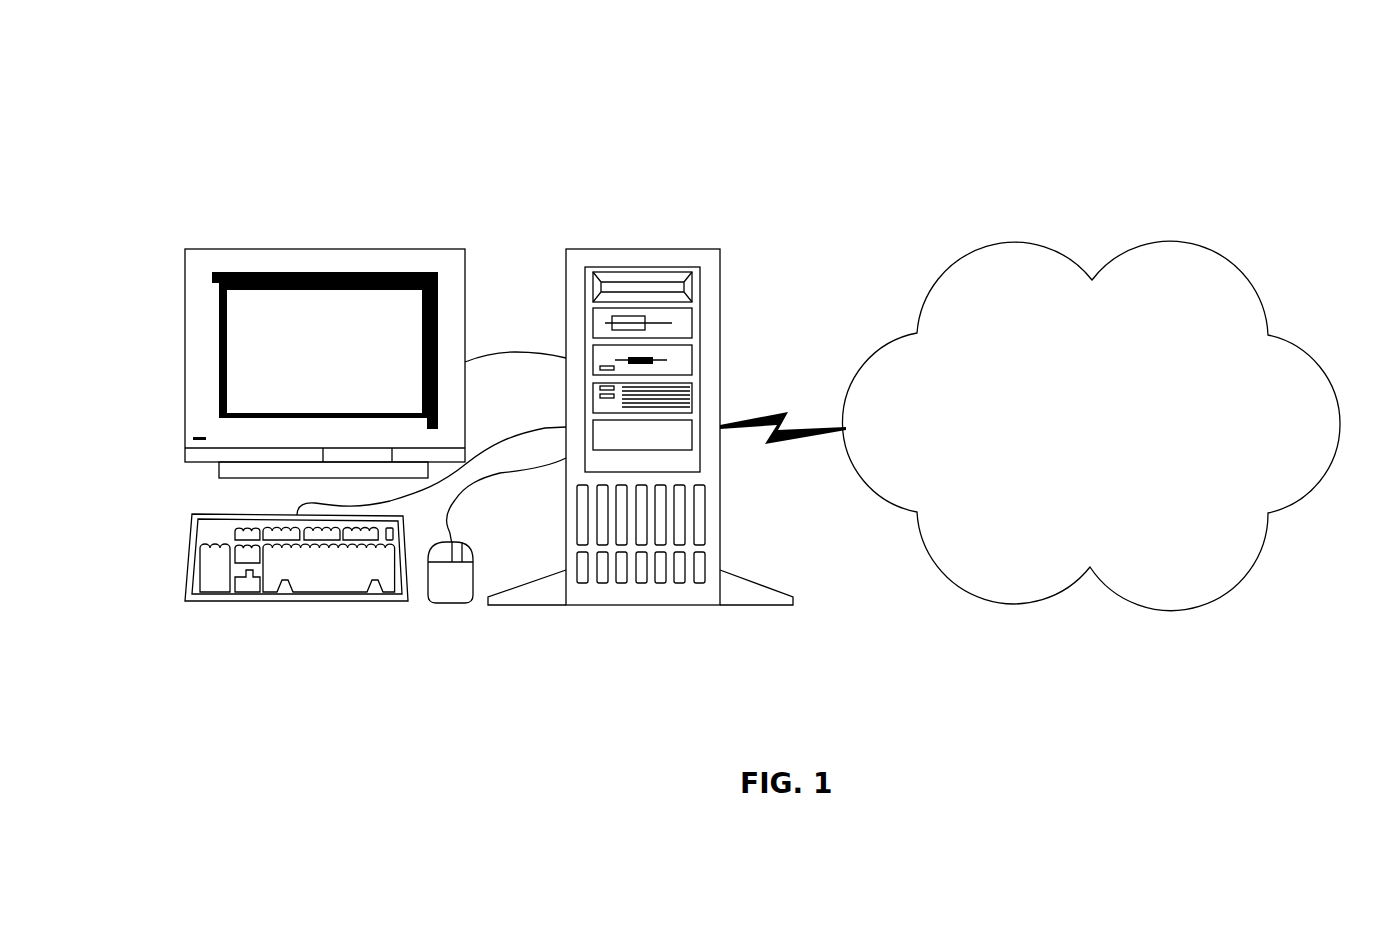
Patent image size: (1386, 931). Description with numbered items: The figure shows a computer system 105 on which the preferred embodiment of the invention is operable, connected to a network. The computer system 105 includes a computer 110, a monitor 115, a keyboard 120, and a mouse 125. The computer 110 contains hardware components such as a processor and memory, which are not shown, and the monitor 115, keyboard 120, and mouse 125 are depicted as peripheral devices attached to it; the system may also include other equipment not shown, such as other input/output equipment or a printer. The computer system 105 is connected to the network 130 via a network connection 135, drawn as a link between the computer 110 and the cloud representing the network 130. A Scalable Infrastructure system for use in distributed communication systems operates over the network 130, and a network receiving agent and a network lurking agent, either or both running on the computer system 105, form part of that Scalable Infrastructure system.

The computer system 105 is at (210, 104).
The computer 110 is at (606, 249).
The monitor 115 is at (226, 249).
The keyboard 120 is at (221, 603).
The mouse 125 is at (444, 603).
The network 130 is at (917, 333).
The network connection 135 is at (794, 414).